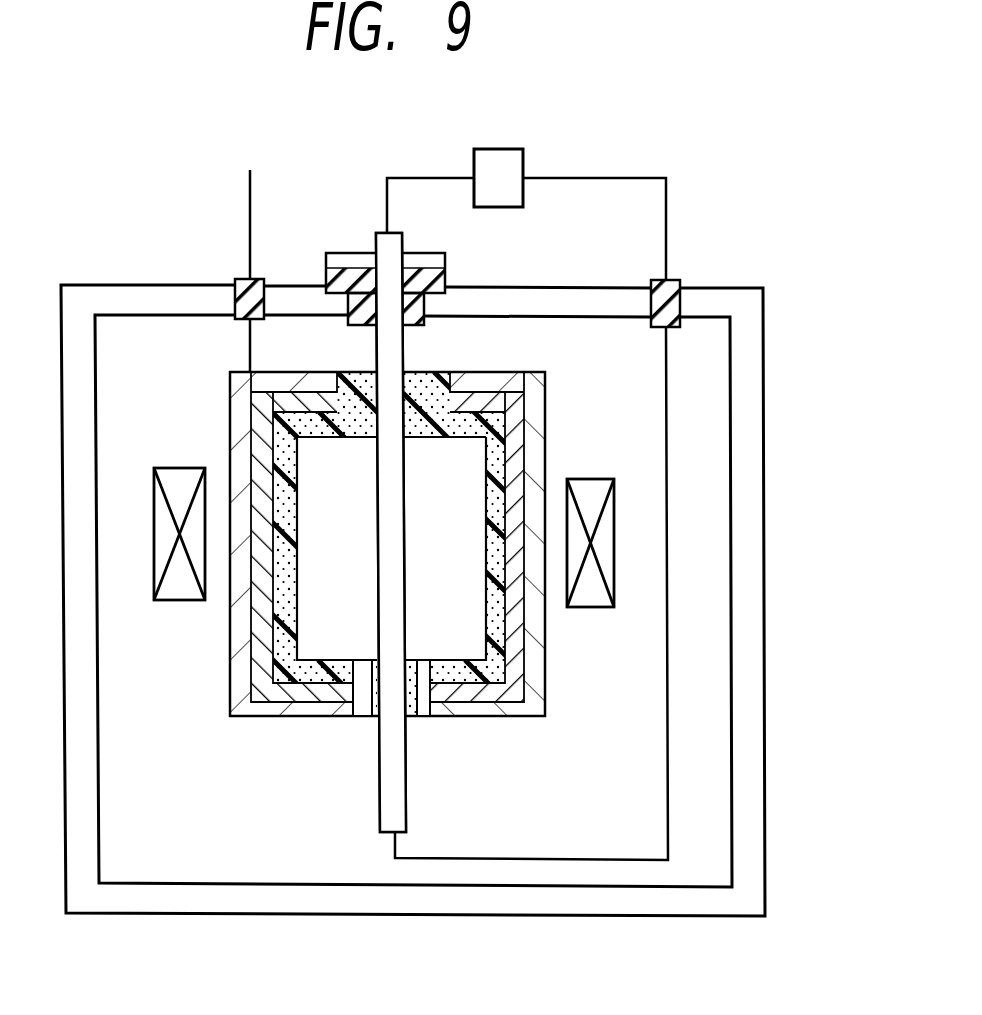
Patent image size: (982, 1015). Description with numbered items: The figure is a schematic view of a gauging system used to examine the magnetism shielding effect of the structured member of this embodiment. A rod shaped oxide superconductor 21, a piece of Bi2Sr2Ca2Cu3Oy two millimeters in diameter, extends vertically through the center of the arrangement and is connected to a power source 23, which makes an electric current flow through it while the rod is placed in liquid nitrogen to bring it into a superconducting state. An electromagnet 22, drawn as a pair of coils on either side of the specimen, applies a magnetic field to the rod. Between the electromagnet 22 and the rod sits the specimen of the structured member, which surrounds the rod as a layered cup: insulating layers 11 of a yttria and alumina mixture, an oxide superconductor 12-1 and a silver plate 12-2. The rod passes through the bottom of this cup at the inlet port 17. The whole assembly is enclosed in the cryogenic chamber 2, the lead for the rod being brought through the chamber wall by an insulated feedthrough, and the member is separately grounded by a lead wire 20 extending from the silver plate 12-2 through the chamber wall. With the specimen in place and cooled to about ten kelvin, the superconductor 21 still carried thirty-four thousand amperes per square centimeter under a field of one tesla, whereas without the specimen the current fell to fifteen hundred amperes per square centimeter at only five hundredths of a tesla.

The cryogenic chamber 2 is at (750, 378).
The insulating layer 11 is at (547, 695).
The oxide superconductor 12-1 is at (500, 673).
The silver plate 12-2 is at (538, 445).
The cooling gas inlet port 17 is at (360, 712).
The lead wire 20 is at (250, 232).
The rod shaped oxide superconductor 21 is at (393, 357).
The electromagnet 22 is at (617, 500).
The power source 23 is at (516, 163).